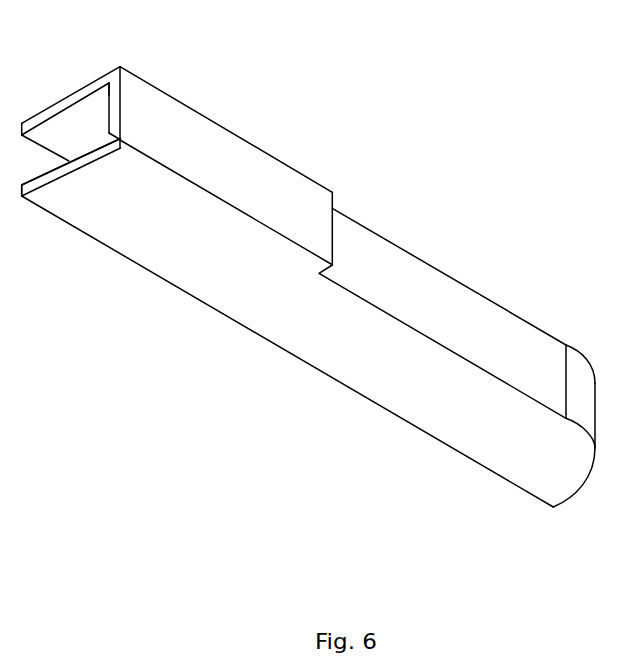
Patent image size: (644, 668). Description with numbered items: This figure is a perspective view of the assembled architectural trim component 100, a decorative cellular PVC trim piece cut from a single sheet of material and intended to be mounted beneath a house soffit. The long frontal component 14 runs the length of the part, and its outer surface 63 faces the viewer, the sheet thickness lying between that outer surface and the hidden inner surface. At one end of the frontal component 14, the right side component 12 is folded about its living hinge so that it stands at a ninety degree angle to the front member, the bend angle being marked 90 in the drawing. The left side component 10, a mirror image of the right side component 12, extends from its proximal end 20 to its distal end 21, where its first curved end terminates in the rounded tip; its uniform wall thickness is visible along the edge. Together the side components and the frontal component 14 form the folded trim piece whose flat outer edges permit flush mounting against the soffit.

The left side component 10 is at (280, 340).
The right side component 12 is at (50, 110).
The frontal component 14 is at (200, 122).
The proximal end 20 is at (22, 196).
The distal end 21 is at (553, 507).
The outer surface 63 is at (226, 202).
The architectural trim component 100 is at (432, 285).
The bend angle of 90 degrees 90 is at (110, 87).